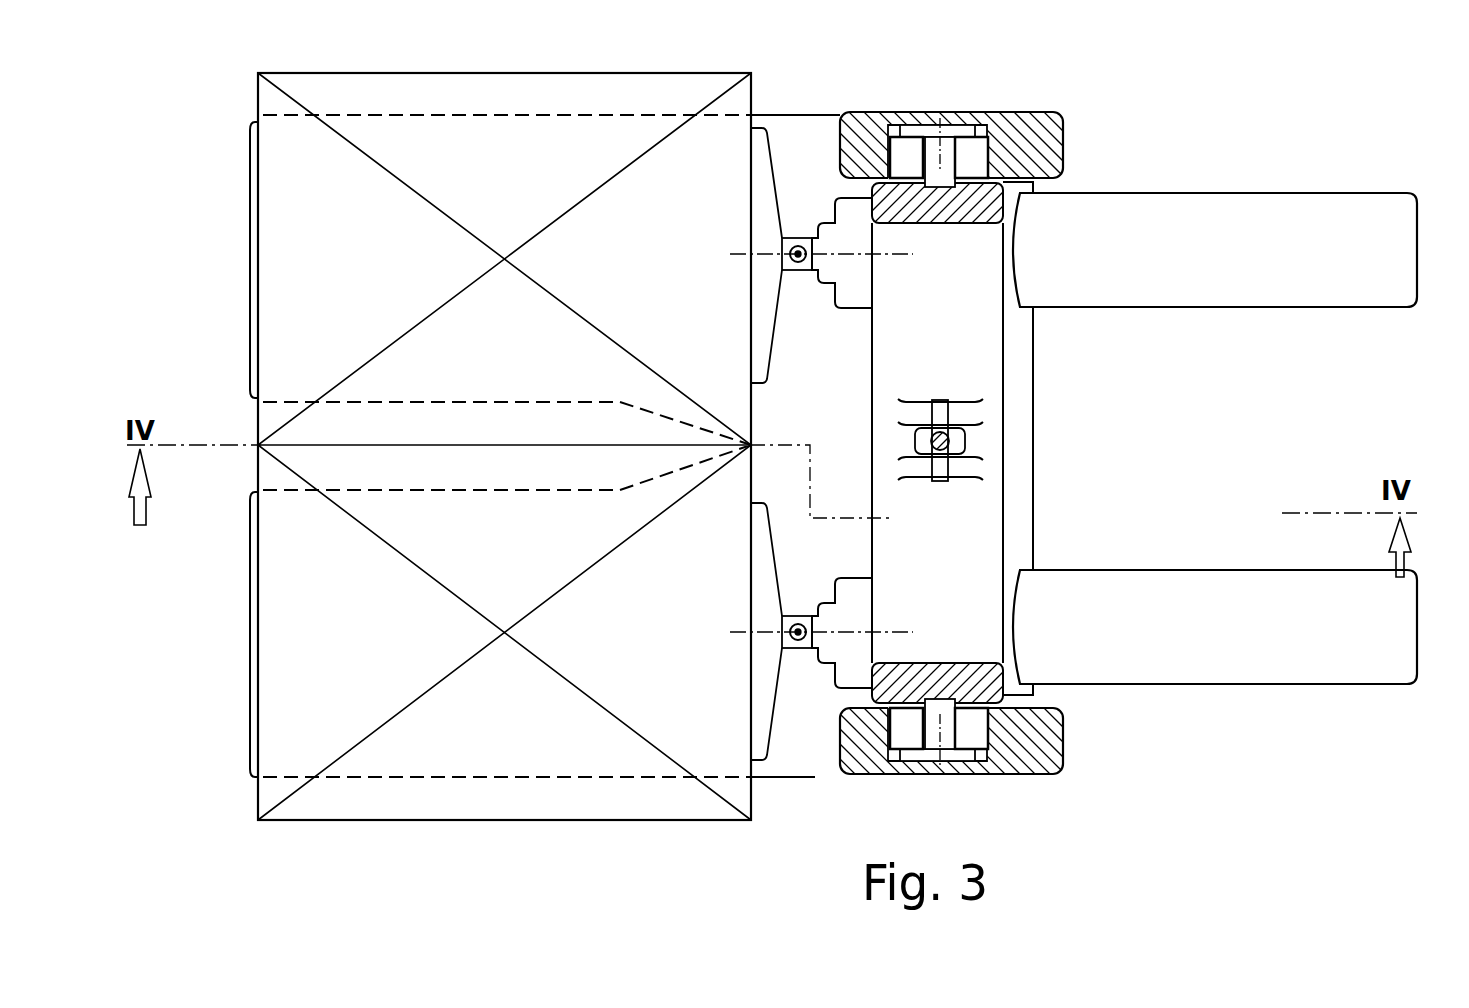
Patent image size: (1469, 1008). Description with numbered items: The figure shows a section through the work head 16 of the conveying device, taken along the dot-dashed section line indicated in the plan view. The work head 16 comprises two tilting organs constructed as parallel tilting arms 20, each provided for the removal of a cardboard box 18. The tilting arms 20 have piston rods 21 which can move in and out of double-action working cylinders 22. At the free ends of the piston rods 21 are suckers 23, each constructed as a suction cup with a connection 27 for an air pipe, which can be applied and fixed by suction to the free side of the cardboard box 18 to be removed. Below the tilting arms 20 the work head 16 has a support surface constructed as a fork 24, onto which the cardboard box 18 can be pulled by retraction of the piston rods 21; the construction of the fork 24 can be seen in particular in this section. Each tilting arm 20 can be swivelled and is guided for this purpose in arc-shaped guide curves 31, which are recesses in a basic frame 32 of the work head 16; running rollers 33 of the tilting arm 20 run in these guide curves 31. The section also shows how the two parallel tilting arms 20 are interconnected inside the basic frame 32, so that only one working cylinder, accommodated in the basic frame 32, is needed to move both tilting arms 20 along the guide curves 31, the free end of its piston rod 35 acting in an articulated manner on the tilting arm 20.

The work head 16 is at (1063, 141).
The cardboard box 18 is at (370, 102).
The tilting arm 20 is at (1152, 193).
The piston rod 21 is at (810, 243).
The double-action working cylinder 22 is at (1238, 215).
The sucker 23 is at (763, 207).
The fork 24 is at (252, 709).
The connection 27 is at (799, 263).
The guide curve 31 is at (990, 147).
The basic frame 32 is at (1040, 735).
The running roller 33 is at (910, 150).
The piston rod 35 is at (953, 440).